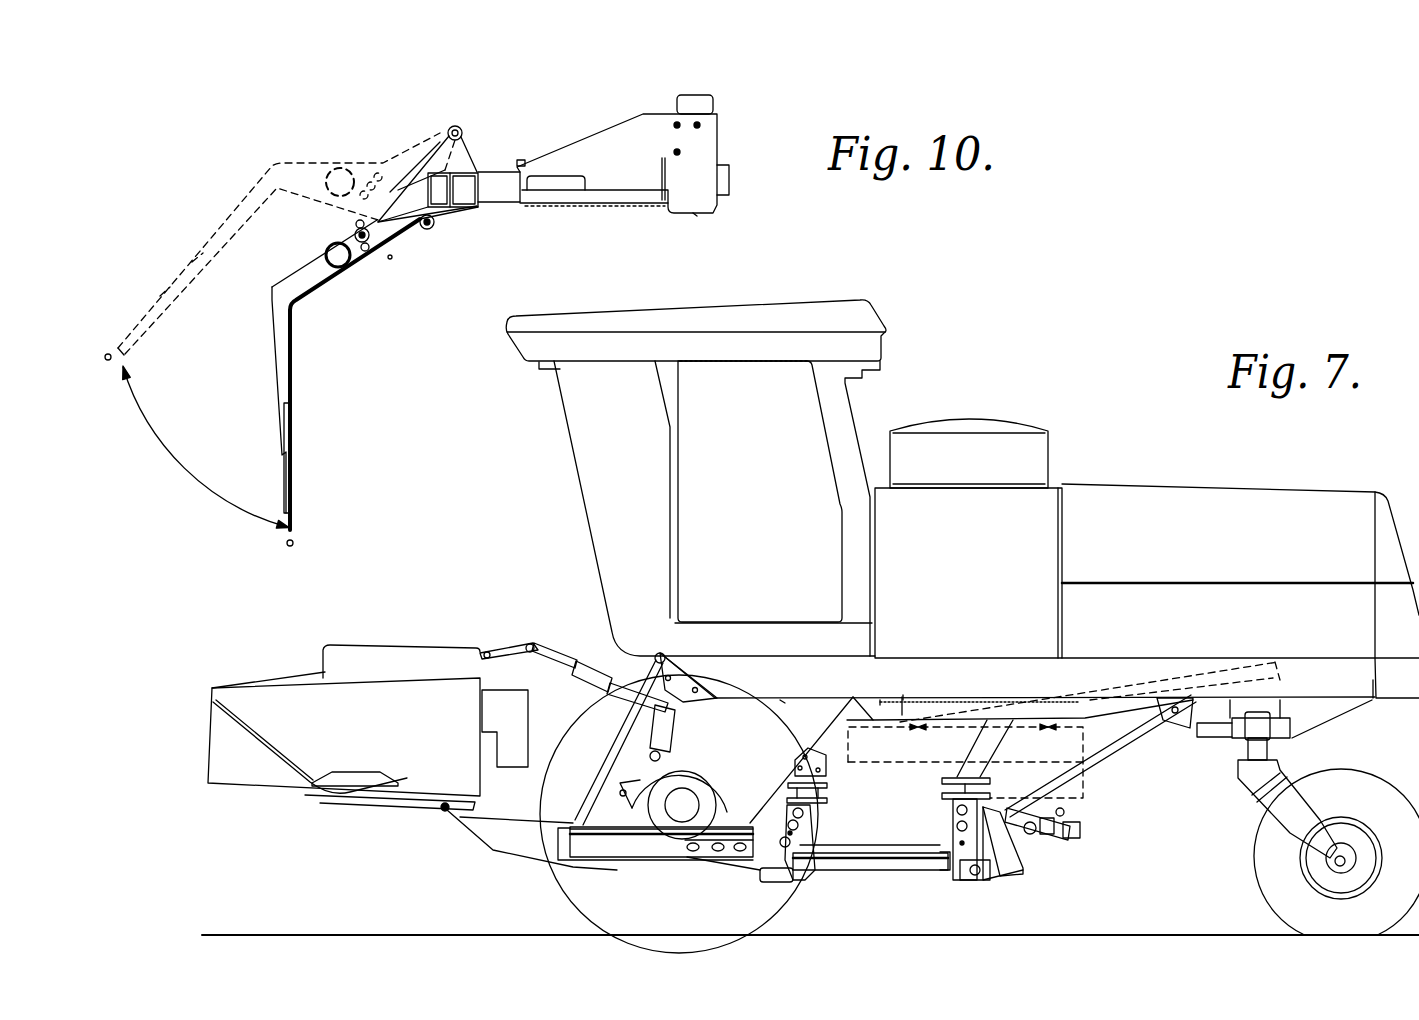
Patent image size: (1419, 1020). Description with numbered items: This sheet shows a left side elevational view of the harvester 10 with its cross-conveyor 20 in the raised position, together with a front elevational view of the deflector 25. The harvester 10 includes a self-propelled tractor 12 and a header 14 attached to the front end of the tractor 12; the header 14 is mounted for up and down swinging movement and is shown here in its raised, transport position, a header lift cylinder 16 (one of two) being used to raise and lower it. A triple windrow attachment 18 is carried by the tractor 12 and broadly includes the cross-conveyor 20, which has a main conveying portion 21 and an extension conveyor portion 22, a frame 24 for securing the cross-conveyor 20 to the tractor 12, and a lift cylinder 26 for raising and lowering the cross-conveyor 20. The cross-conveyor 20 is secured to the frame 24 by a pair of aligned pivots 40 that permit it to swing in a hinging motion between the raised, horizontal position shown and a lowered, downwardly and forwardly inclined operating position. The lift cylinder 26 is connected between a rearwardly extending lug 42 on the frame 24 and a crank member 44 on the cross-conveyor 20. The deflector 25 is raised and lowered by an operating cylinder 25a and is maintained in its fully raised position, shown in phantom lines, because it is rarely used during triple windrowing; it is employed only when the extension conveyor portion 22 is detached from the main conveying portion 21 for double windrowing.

In FIG. 7, the harvester 10 is at (1104, 438).
In FIG. 7, the self-propelled tractor 12 is at (1284, 489).
In FIG. 7, the header 14 is at (273, 670).
In FIG. 7, the header lift cylinder 16 is at (653, 735).
In FIG. 7, the triple windrow attachment 18 is at (892, 894).
In FIG. 7, the cross-conveyor 20 is at (825, 883).
In FIG. 7, the main conveying portion 21 is at (655, 866).
In FIG. 7, the extension conveyor portion 22 is at (1083, 810).
In FIG. 7, the frame 24 is at (1117, 712).
In FIG. 10, the deflector 25 is at (216, 235).
In FIG. 7, the deflector 25 is at (1072, 750).
In FIG. 10, the operating cylinder 25a is at (427, 158).
In FIG. 7, the lift cylinder 26 is at (1020, 877).
In FIG. 7, the pivots 40 is at (773, 880).
In FIG. 7, the rearwardly extending lug 42 is at (990, 797).
In FIG. 7, the crank member 44 is at (1002, 872).